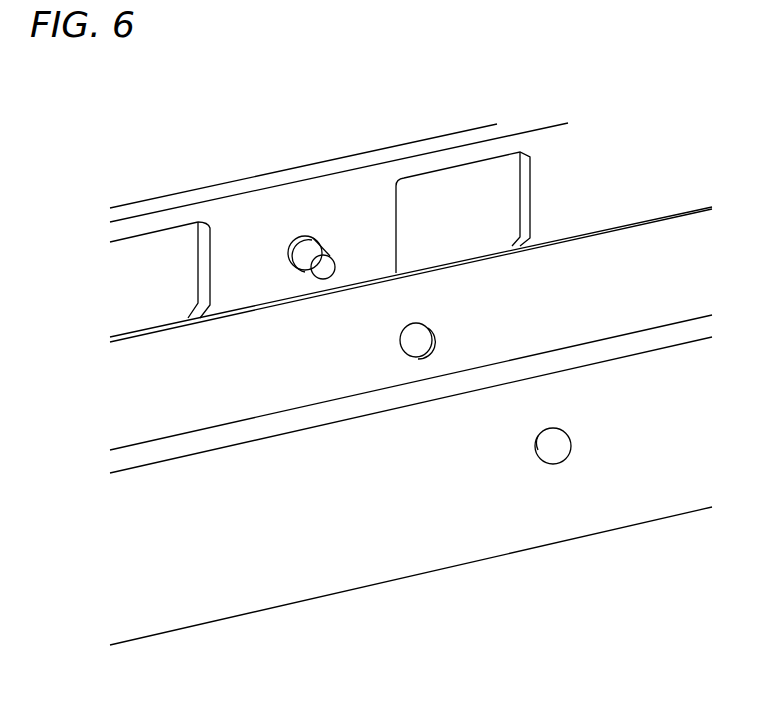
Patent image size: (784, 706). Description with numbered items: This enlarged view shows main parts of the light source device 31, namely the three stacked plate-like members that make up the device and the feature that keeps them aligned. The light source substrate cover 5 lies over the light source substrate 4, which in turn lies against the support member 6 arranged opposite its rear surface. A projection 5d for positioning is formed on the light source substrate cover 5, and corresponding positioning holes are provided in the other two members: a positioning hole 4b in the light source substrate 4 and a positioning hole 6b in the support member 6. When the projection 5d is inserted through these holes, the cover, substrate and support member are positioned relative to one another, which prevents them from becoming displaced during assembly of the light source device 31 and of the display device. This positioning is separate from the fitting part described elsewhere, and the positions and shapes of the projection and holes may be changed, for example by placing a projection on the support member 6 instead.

The light source substrate 4 is at (530, 263).
The positioning hole of light source substrate 4b is at (425, 330).
The light source substrate cover 5 is at (245, 212).
The projection for positioning 5d is at (327, 262).
The support member 6 is at (637, 390).
The positioning hole of support member 6b is at (550, 443).
The light source device 31 is at (433, 581).